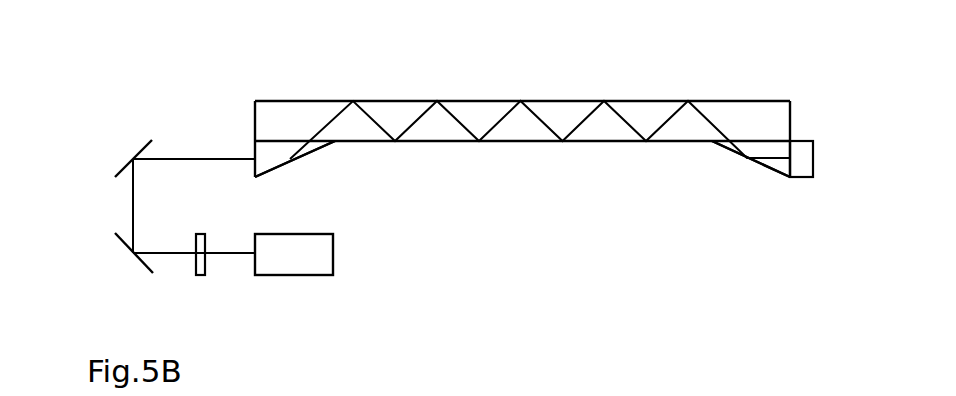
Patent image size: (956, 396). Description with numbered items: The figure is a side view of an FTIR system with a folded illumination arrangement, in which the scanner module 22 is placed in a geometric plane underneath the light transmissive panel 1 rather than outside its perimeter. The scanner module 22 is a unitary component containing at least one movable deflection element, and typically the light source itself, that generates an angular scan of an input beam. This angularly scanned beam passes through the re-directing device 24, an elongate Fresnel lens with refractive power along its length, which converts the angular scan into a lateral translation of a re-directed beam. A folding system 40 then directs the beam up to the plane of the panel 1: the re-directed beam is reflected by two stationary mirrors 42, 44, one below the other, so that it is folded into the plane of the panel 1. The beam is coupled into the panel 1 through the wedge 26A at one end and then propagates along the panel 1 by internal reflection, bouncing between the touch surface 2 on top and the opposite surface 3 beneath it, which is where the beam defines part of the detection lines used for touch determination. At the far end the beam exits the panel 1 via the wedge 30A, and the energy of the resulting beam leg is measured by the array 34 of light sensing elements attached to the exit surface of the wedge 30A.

The light transmissive panel 1 is at (522, 111).
The touch surface 2 is at (645, 100).
The opposite surface 3 is at (610, 141).
The wedge 26A is at (290, 162).
The wedge 30A is at (755, 162).
The array of light sensing elements 34 is at (810, 158).
The folding system 40 is at (127, 94).
The stationary mirror 42 is at (130, 253).
The stationary mirror 44 is at (130, 158).
The re-directing device 24 is at (206, 270).
The scanner module 22 is at (325, 255).